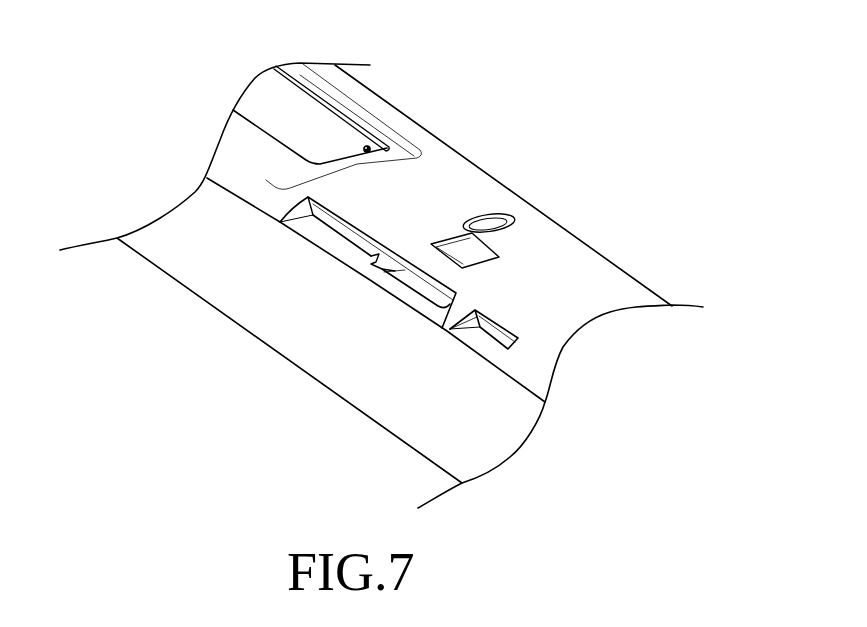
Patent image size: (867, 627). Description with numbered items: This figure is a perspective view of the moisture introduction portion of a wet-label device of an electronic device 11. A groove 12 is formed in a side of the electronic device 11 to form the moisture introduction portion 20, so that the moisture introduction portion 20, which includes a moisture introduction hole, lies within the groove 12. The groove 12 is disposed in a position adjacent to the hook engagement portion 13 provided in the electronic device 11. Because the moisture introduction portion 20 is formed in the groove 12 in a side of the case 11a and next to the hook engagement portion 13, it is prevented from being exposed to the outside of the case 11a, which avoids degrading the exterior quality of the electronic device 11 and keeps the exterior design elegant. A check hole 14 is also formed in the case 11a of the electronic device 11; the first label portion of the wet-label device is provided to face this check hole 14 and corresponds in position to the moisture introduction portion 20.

The electronic device 11 is at (280, 157).
The case 11a is at (343, 133).
The groove 12 is at (336, 238).
The hook engagement portion 13 is at (482, 343).
The check hole 14 is at (493, 222).
The moisture introduction portion 20 is at (414, 283).